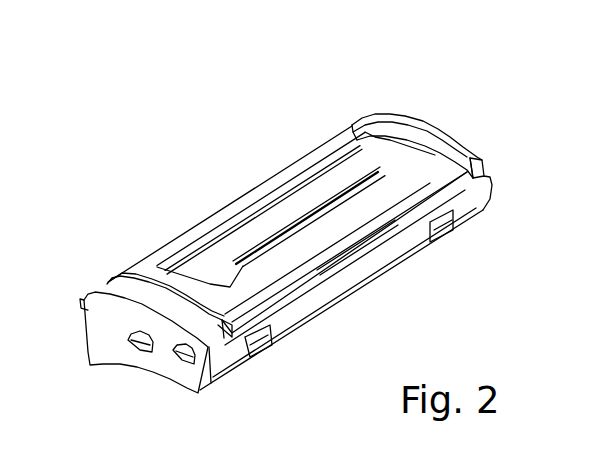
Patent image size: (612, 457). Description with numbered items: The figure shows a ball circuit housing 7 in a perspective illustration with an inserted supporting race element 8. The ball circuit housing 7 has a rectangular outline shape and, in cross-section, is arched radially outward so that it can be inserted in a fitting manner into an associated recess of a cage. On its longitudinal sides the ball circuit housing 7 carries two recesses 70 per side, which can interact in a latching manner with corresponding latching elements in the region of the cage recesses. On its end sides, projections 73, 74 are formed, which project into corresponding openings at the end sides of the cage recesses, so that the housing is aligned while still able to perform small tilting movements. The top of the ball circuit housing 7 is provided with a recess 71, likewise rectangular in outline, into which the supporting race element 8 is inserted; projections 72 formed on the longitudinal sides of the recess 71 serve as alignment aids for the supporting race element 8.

The ball circuit housing 7 is at (286, 253).
The supporting race element 8 is at (372, 148).
The recesses 70 is at (445, 222).
The recess 71 is at (345, 145).
The projections 72 is at (332, 160).
The projection 73 is at (138, 352).
The projection 74 is at (185, 363).